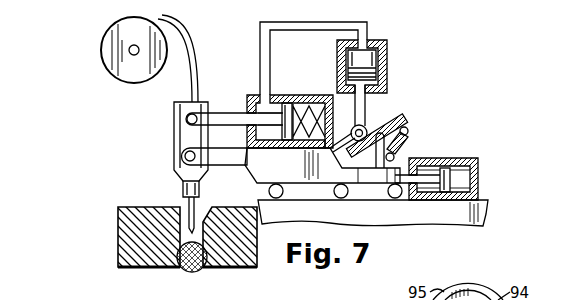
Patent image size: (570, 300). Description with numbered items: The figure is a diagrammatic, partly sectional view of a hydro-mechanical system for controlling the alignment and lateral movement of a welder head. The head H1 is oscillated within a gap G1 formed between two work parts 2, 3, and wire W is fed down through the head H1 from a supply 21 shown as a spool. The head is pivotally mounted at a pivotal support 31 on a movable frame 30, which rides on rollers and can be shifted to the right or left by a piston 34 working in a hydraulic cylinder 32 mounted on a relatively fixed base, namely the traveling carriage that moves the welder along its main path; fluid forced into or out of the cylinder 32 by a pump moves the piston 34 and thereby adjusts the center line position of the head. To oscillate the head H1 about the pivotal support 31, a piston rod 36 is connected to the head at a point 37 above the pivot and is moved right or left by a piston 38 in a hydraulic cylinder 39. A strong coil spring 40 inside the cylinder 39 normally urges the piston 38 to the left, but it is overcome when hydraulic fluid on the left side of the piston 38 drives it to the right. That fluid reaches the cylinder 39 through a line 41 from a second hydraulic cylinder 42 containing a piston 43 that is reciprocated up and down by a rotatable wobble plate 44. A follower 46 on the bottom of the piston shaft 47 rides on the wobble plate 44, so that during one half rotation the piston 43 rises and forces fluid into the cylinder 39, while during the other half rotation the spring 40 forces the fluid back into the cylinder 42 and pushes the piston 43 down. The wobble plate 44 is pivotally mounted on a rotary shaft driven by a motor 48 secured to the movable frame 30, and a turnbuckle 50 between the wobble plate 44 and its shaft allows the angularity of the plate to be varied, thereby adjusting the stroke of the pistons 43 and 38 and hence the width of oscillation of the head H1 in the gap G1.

The work part 2 is at (150, 258).
The work part 3 is at (235, 258).
The supply 21 is at (103, 52).
The wire W is at (193, 60).
The head H1 is at (180, 171).
The gap G1 is at (199, 222).
The movable frame 30 is at (248, 168).
The pivotal support 31 is at (184, 156).
The hydraulic cylinder 32 is at (478, 178).
The piston 34 is at (448, 160).
The piston rod 36 is at (223, 118).
The connection point 37 is at (186, 119).
The piston 38 is at (283, 137).
The hydraulic cylinder 39 is at (253, 95).
The coil spring 40 is at (297, 103).
The line 41 is at (288, 36).
The hydraulic cylinder 42 is at (386, 60).
The piston 43 is at (378, 73).
The wobble plate 44 is at (406, 120).
The follower 46 is at (336, 148).
The piston shaft 47 is at (367, 108).
The motor 48 is at (368, 188).
The turnbuckle 50 is at (408, 143).